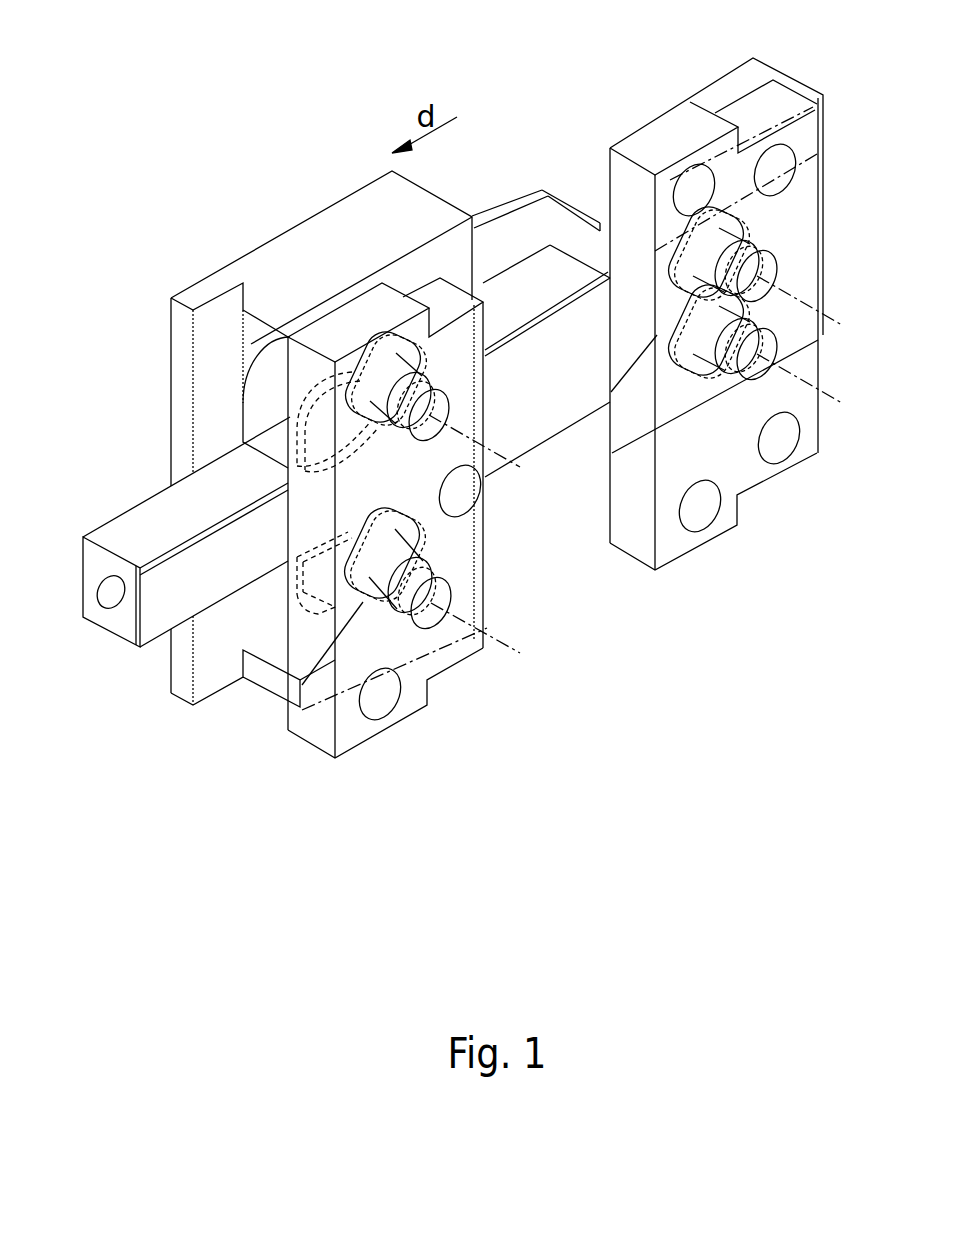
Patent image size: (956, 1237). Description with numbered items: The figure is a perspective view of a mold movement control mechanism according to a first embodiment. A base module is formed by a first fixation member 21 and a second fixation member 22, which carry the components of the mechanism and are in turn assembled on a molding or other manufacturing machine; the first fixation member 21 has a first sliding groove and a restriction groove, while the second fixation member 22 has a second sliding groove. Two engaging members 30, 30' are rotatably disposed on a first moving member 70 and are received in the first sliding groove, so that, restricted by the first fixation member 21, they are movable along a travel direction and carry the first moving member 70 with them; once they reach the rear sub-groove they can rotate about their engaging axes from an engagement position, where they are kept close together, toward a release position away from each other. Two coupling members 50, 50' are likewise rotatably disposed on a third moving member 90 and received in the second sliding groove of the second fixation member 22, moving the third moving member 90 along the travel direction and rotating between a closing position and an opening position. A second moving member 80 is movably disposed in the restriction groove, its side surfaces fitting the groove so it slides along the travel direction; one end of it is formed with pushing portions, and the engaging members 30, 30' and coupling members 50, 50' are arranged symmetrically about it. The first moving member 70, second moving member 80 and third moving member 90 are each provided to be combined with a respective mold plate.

The first fixation member 21 is at (388, 213).
The second fixation member 22 is at (718, 92).
The engaging member 30 is at (408, 670).
The engaging member 30' is at (378, 315).
The coupling member 50 is at (752, 444).
The coupling member 50' is at (700, 191).
The first moving member 70 is at (450, 668).
The second moving member 80 is at (540, 347).
The third moving member 90 is at (793, 467).